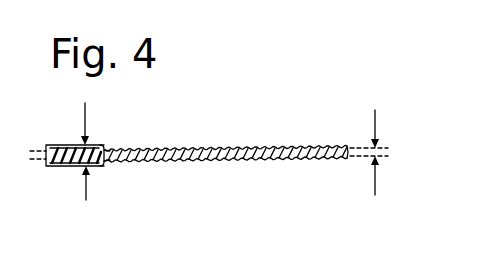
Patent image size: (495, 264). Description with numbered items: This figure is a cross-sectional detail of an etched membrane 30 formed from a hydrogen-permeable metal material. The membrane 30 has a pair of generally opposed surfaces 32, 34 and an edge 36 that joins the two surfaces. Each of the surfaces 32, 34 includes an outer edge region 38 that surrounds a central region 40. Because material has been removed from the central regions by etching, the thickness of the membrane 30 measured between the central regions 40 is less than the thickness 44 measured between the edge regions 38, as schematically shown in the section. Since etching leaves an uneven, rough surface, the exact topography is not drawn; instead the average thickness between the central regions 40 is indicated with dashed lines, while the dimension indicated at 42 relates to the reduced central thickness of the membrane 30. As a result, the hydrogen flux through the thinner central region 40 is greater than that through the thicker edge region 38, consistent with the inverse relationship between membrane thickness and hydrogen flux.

The etched membrane 30 is at (260, 95).
The surface 32 is at (69, 140).
The surface 34 is at (64, 171).
The edge 36 is at (47, 165).
The outer edge region 38 is at (100, 144).
The central region 40 is at (263, 146).
The cable diameter 42 is at (374, 178).
The thickness 44 is at (87, 188).